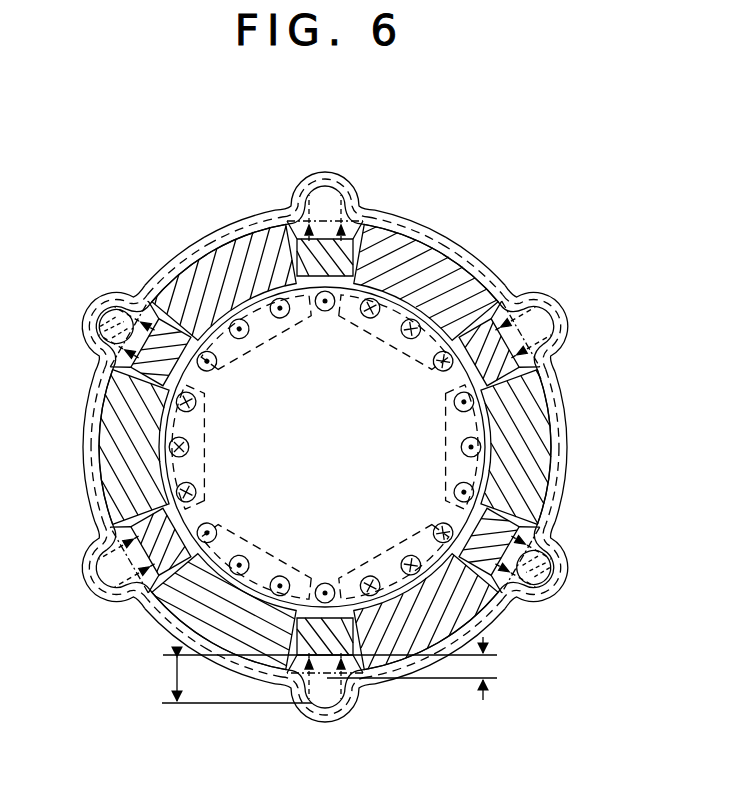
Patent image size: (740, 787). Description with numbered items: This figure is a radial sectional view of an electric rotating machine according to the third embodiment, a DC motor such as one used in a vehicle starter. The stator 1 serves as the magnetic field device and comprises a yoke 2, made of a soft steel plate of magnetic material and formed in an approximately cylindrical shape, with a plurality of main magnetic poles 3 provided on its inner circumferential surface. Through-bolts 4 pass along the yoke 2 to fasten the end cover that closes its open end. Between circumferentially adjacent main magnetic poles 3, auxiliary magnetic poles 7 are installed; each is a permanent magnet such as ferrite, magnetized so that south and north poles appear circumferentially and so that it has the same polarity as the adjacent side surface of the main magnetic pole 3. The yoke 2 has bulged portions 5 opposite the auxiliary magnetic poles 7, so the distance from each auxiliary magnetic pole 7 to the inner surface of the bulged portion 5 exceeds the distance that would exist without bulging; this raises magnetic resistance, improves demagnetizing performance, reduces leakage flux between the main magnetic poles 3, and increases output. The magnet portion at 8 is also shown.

The stator 1 is at (491, 246).
The yoke 2 is at (159, 263).
The magnetic pole 3 is at (237, 252).
The through-bolt 4 is at (103, 321).
The bulged portion 5 is at (330, 169).
The auxiliary magnetic pole 7 is at (312, 226).
The main field magnet 8 is at (370, 281).